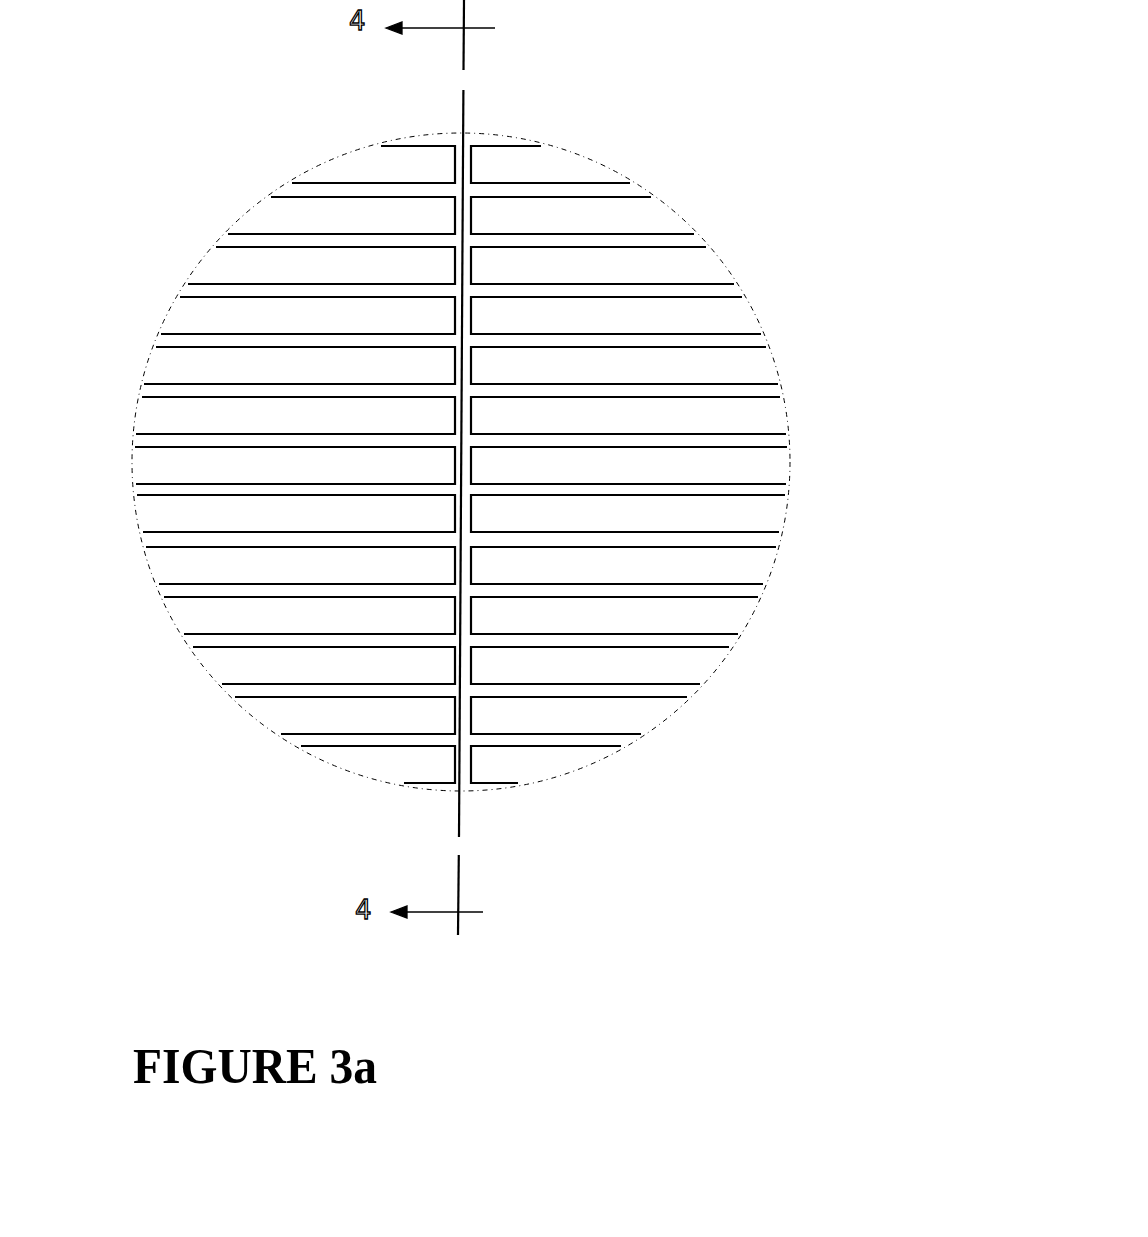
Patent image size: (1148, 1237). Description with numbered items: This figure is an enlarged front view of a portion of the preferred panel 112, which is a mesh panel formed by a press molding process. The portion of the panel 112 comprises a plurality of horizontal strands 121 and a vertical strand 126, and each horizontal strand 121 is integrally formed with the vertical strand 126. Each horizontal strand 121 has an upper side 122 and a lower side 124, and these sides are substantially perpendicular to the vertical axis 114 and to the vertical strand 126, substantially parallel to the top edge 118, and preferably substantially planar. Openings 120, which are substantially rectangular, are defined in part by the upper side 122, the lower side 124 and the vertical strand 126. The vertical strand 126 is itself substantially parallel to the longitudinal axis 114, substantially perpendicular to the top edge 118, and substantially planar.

The panel 112 is at (233, 176).
The vertical axis 114 is at (465, 118).
The top edge 118 is at (503, 142).
The openings 120 is at (693, 273).
The horizontal strands 121 is at (745, 347).
The upper side 122 is at (755, 437).
The lower side 124 is at (742, 452).
The vertical strand 126 is at (450, 760).